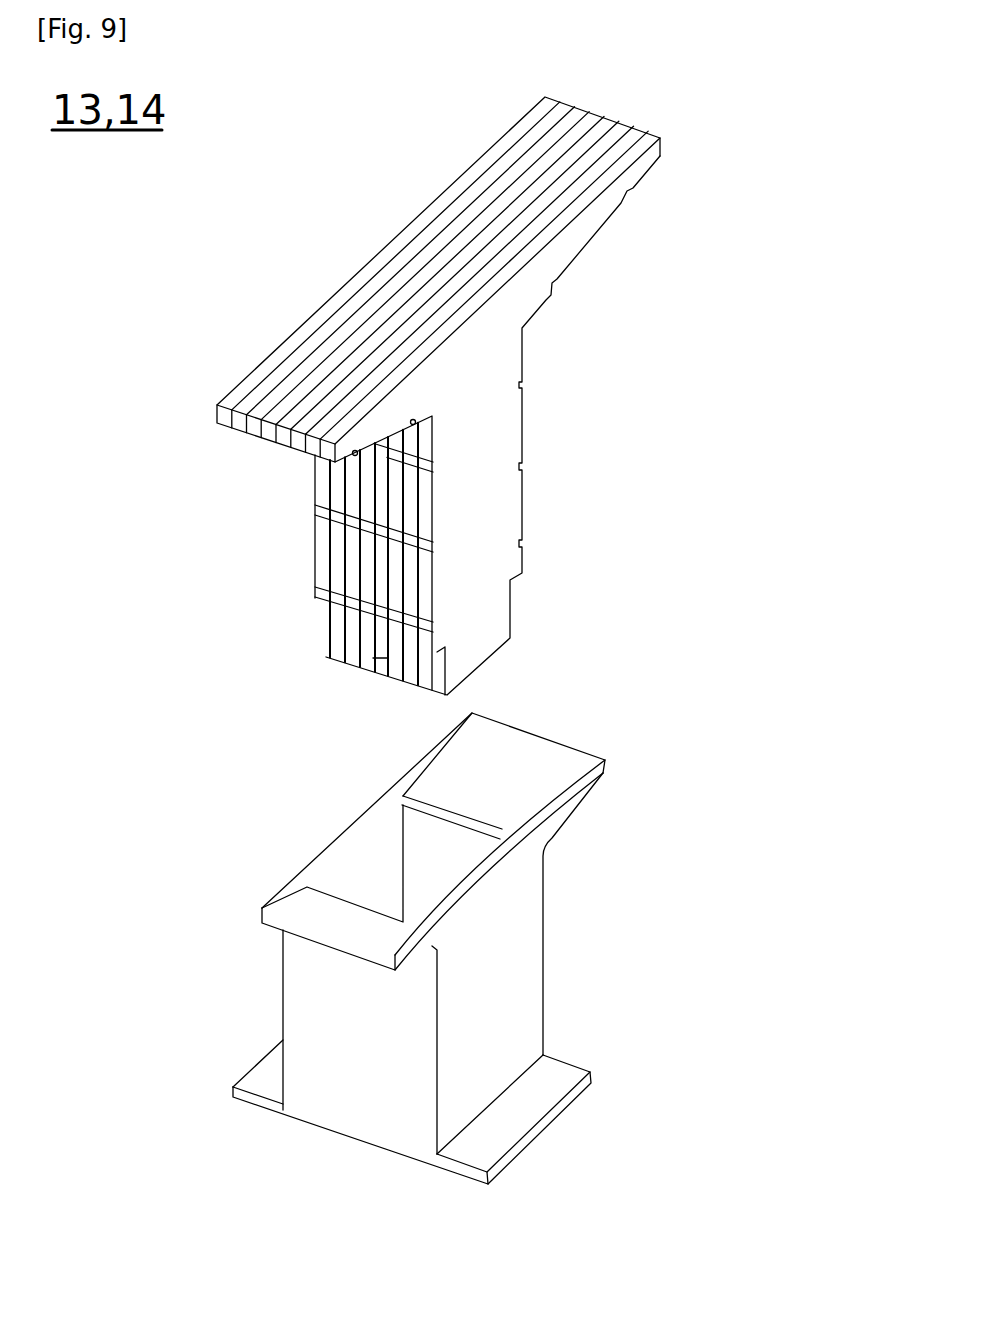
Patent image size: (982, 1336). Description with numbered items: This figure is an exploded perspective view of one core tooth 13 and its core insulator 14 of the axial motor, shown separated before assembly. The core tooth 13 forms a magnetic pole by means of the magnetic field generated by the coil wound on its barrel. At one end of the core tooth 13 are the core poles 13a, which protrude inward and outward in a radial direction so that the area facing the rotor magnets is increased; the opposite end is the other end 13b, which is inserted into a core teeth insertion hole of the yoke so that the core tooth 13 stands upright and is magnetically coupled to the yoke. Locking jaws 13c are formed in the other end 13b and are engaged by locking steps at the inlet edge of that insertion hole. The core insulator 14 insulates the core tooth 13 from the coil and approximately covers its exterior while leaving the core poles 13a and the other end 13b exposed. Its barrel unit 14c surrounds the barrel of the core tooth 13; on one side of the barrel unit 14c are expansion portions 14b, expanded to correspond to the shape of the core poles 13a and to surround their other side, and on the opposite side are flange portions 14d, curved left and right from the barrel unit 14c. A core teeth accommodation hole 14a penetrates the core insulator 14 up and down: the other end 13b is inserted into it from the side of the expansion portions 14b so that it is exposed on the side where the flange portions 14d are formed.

The core tooth 13 is at (272, 338).
The core poles 13a is at (408, 275).
The other end 13b is at (370, 663).
The locking jaws 13c is at (517, 580).
The core insulator 14 is at (325, 1132).
The core teeth accommodation hole 14a is at (440, 848).
The expansion portions 14b is at (528, 777).
The barrel unit 14c is at (543, 948).
The flange portions 14d is at (565, 1063).